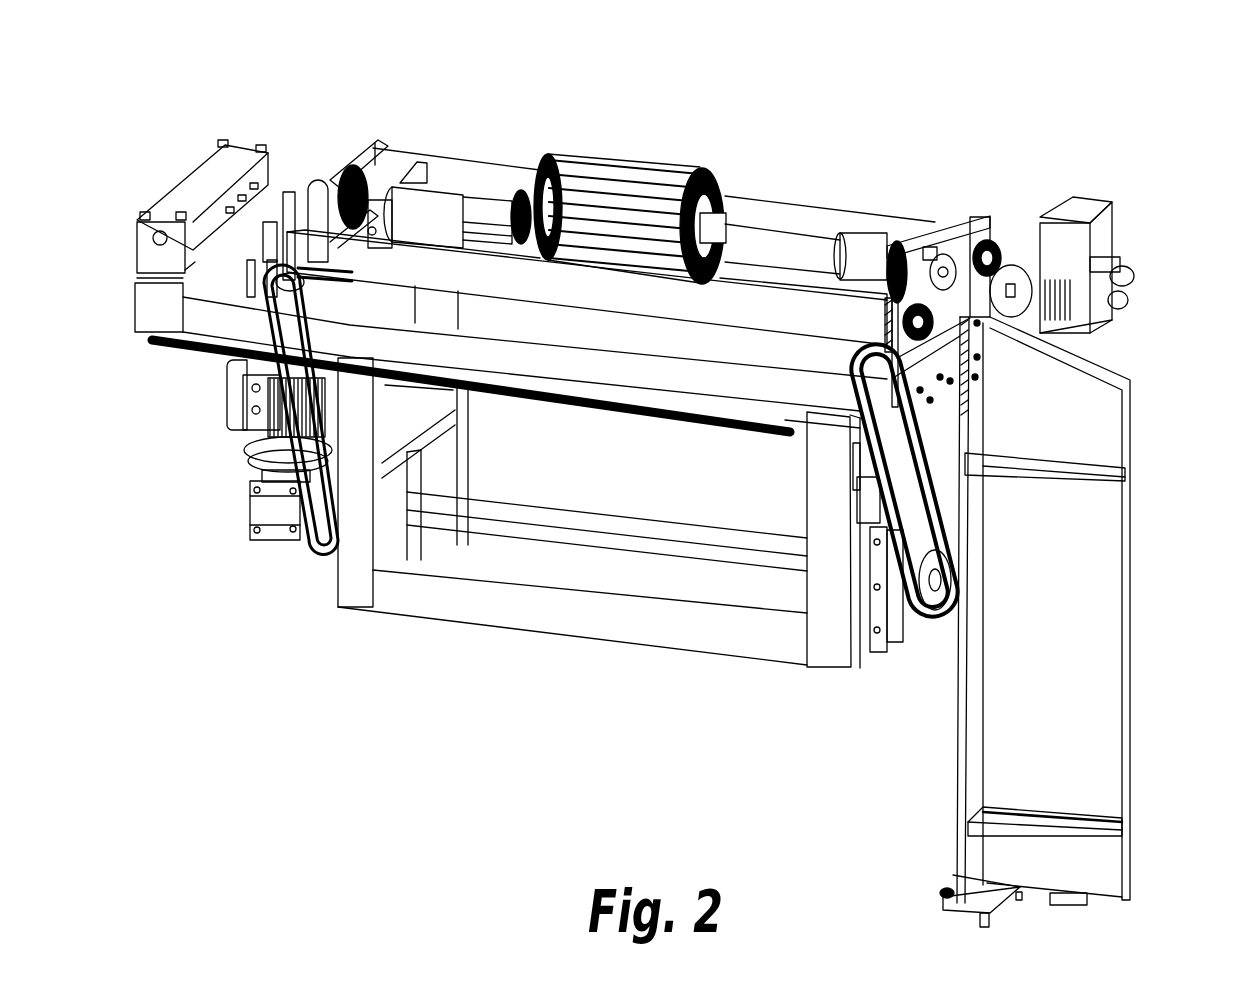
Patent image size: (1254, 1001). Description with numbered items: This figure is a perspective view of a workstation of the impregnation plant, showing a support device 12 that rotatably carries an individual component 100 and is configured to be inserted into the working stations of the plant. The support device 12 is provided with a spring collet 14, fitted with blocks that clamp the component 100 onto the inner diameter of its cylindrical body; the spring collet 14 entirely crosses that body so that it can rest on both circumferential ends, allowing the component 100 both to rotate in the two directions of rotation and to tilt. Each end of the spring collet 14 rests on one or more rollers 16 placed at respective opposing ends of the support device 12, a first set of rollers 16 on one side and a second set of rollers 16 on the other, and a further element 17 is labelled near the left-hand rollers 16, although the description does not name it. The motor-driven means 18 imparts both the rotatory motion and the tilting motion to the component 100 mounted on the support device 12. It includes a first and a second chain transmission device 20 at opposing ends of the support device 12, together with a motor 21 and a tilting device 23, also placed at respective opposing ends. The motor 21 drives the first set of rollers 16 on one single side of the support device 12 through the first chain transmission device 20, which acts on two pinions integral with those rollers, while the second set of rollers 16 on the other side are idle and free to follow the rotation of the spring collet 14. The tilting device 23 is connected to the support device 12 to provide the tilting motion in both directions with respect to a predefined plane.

The support device 12 is at (773, 210).
The spring collet 14 is at (431, 203).
The component 100 is at (637, 147).
The rollers 16 is at (283, 220).
The pulley 17 is at (320, 220).
The motor-driven means 18 is at (1140, 556).
The chain transmission device 20 is at (330, 547).
The motor 21 is at (253, 507).
The tilting device 23 is at (1140, 800).